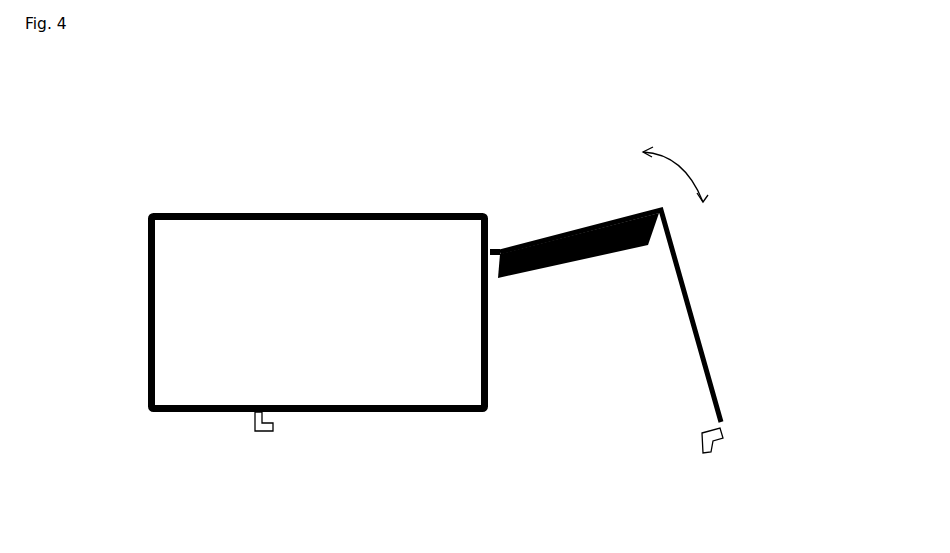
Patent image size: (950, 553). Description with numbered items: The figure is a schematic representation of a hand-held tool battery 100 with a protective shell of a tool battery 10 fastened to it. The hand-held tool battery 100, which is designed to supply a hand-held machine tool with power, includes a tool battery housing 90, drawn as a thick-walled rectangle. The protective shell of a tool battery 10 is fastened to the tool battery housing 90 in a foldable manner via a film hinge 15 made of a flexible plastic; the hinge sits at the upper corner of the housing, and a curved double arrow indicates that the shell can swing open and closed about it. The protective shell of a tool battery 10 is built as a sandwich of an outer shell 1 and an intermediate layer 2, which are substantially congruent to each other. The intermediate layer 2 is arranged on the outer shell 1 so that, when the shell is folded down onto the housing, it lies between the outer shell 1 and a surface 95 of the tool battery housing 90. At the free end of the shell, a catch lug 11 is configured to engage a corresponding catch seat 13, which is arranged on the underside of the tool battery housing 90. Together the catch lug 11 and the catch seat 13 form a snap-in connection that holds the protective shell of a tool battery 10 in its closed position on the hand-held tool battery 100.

The hand-held tool battery 100 is at (187, 165).
The tool battery housing 90 is at (150, 313).
The surface of the tool battery housing 95 is at (418, 413).
The catch seat 13 is at (253, 420).
The protective shell of a tool battery 10 is at (740, 83).
The film hinge 15 is at (498, 250).
The outer shell 1 is at (690, 303).
The intermediate layer 2 is at (688, 375).
The catch lug 11 is at (710, 453).